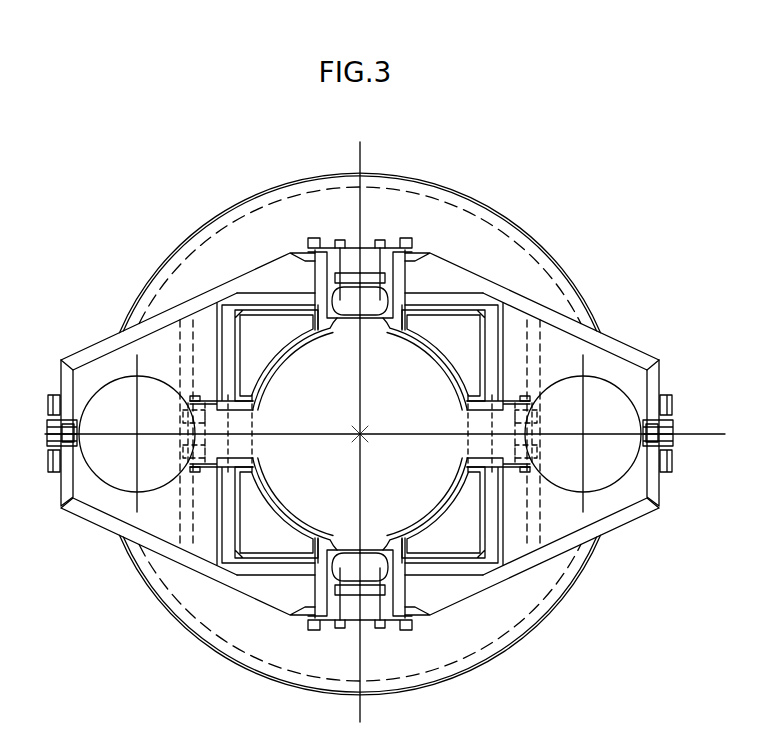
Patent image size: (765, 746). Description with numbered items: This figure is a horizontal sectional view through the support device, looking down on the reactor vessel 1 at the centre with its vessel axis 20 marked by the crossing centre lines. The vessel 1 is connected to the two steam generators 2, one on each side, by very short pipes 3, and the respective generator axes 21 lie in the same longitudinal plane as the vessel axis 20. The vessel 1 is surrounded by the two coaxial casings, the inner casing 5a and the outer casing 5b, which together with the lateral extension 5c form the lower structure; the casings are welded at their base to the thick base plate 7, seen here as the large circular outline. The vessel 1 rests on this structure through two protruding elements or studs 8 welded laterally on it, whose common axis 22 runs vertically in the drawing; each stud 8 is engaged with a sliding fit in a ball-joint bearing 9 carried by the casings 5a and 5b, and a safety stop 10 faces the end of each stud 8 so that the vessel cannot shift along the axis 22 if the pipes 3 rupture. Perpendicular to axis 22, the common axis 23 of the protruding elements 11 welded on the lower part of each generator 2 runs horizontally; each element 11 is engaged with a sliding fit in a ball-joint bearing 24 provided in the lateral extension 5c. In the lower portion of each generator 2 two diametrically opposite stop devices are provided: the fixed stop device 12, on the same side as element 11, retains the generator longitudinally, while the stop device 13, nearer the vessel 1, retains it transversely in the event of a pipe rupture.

The reactor vessel 1 is at (292, 480).
The steam generator 2 is at (572, 400).
The pipe 3 is at (490, 467).
The inner casing 5a is at (495, 556).
The outer casing 5b is at (195, 320).
The lateral extension 5c is at (637, 512).
The base plate 7 is at (420, 663).
The protruding element 8 is at (370, 553).
The ball-joint bearing 9 is at (383, 553).
The safety stop 10 is at (350, 622).
The protruding element 11 is at (647, 424).
The fixed stop device 12 is at (448, 320).
The stop device 13 is at (540, 447).
The axis of the vessel 20 is at (362, 440).
The axis of the generator 21 is at (585, 434).
The common axis of the protruding elements 8 22 is at (365, 405).
The common axis of the protruding elements 11 23 is at (270, 432).
The ball-joint bearing 24 is at (673, 443).